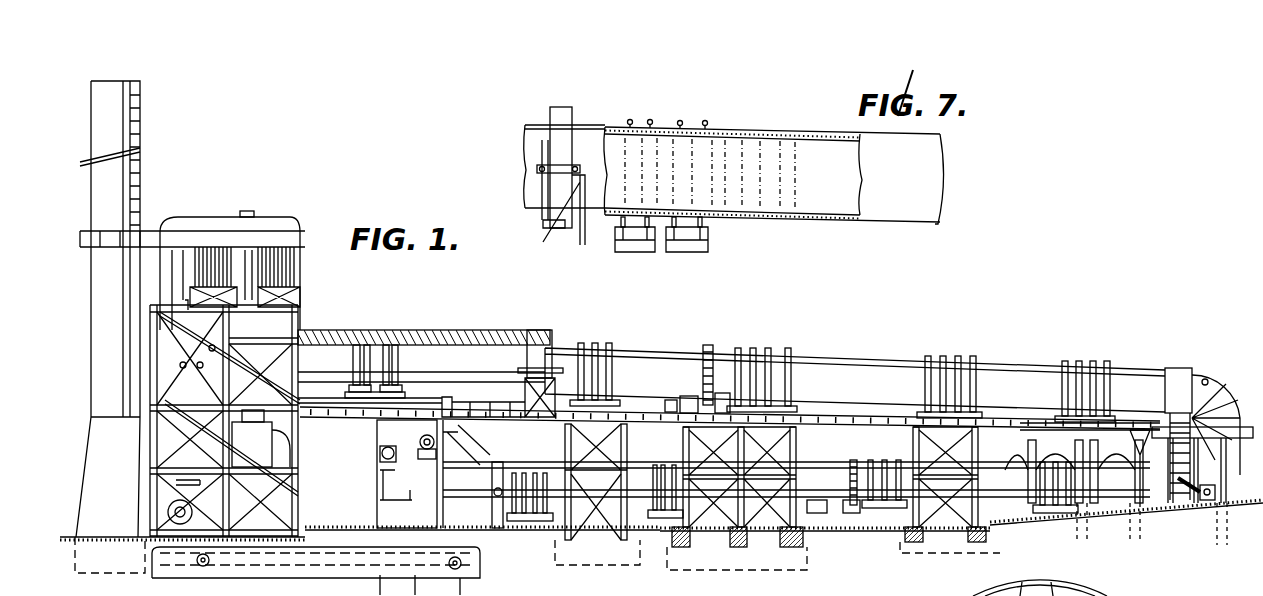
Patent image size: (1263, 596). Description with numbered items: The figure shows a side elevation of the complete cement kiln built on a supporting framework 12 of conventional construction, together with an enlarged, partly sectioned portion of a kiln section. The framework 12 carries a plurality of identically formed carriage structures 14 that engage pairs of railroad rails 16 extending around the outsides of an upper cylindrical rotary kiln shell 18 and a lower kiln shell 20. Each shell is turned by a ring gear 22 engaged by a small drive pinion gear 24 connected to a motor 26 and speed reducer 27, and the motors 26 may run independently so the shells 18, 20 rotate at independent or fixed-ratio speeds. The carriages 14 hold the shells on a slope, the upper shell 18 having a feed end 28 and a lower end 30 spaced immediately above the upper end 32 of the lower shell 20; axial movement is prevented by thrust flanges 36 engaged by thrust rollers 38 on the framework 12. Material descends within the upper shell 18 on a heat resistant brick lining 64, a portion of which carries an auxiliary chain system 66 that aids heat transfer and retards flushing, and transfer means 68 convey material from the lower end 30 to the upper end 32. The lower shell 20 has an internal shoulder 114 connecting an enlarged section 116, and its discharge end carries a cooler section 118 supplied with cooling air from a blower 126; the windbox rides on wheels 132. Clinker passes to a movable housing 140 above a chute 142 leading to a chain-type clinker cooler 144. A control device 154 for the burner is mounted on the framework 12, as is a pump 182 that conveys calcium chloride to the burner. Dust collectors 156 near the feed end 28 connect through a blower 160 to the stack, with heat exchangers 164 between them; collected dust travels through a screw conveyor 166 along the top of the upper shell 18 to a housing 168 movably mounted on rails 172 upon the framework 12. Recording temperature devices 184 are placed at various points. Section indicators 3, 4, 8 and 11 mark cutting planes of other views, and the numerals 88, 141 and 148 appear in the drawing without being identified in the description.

In FIG. 1, the section line 3- 3 is at (638, 585).
In FIG. 1, the section line 4- 4 is at (545, 332).
In FIG. 1, the section line 8- 8 is at (794, 346).
In FIG. 1, the section line 11- 11 is at (1000, 585).
In FIG. 1, the supporting framework 12 is at (724, 550).
In FIG. 1, the carriage structures 14 is at (398, 380).
In FIG. 7, the carriage structures 14 is at (724, 242).
In FIG. 1, the railroad rails 16 is at (372, 345).
In FIG. 7, the railroad rails 16 is at (630, 122).
In FIG. 1, the upper cylindrical rotary kiln shell 18 is at (905, 362).
In FIG. 7, the upper cylindrical rotary kiln shell 18 is at (930, 141).
In FIG. 1, the lower cylindrical rotary kiln shell 20 is at (813, 464).
In FIG. 1, the ring gear 22 is at (708, 345).
In FIG. 1, the drive pinion gear 24 is at (704, 414).
In FIG. 1, the motor 26 is at (686, 402).
In FIG. 1, the speed reducer 27 is at (694, 424).
In FIG. 1, the feed end 28 is at (282, 357).
In FIG. 1, the lower end 30 is at (1163, 388).
In FIG. 1, the upper end 32 is at (1158, 482).
In FIG. 1, the thrust flanges 36 is at (800, 372).
In FIG. 1, the thrust rollers 38 is at (800, 400).
In FIG. 7, the heat resistant brick lining 64 is at (842, 138).
In FIG. 7, the auxiliary chain system 66 is at (760, 140).
In FIG. 1, the transfer means 68 is at (1179, 364).
In FIG. 1, the support leg 88 is at (1236, 462).
In FIG. 1, the internal shoulder 114 is at (950, 487).
In FIG. 1, the enlarged section 116 is at (1107, 490).
In FIG. 1, the cooler section 118 is at (462, 470).
In FIG. 1, the blower 126 is at (492, 485).
In FIG. 1, the wheels 132 is at (508, 535).
In FIG. 1, the movable housing 140 is at (395, 560).
In FIG. 1, the conveyor roller 141 is at (500, 560).
In FIG. 1, the chute 142 is at (470, 560).
In FIG. 1, the chain-type clinker cooler 144 is at (345, 565).
In FIG. 1, the conveyor roller 148 is at (430, 560).
In FIG. 1, the control device 154 is at (384, 447).
In FIG. 1, the dust collectors 156 is at (176, 254).
In FIG. 1, the blower 160 is at (202, 540).
In FIG. 1, the heat exchangers 164 is at (177, 397).
In FIG. 1, the screw conveyor 166 is at (430, 333).
In FIG. 1, the housing 168 is at (552, 346).
In FIG. 7, the housing 168 is at (568, 112).
In FIG. 1, the rails 172 is at (528, 373).
In FIG. 7, the rails 172 is at (537, 170).
In FIG. 1, the pump 182 is at (420, 508).
In FIG. 1, the recording temperature devices 184 is at (288, 318).